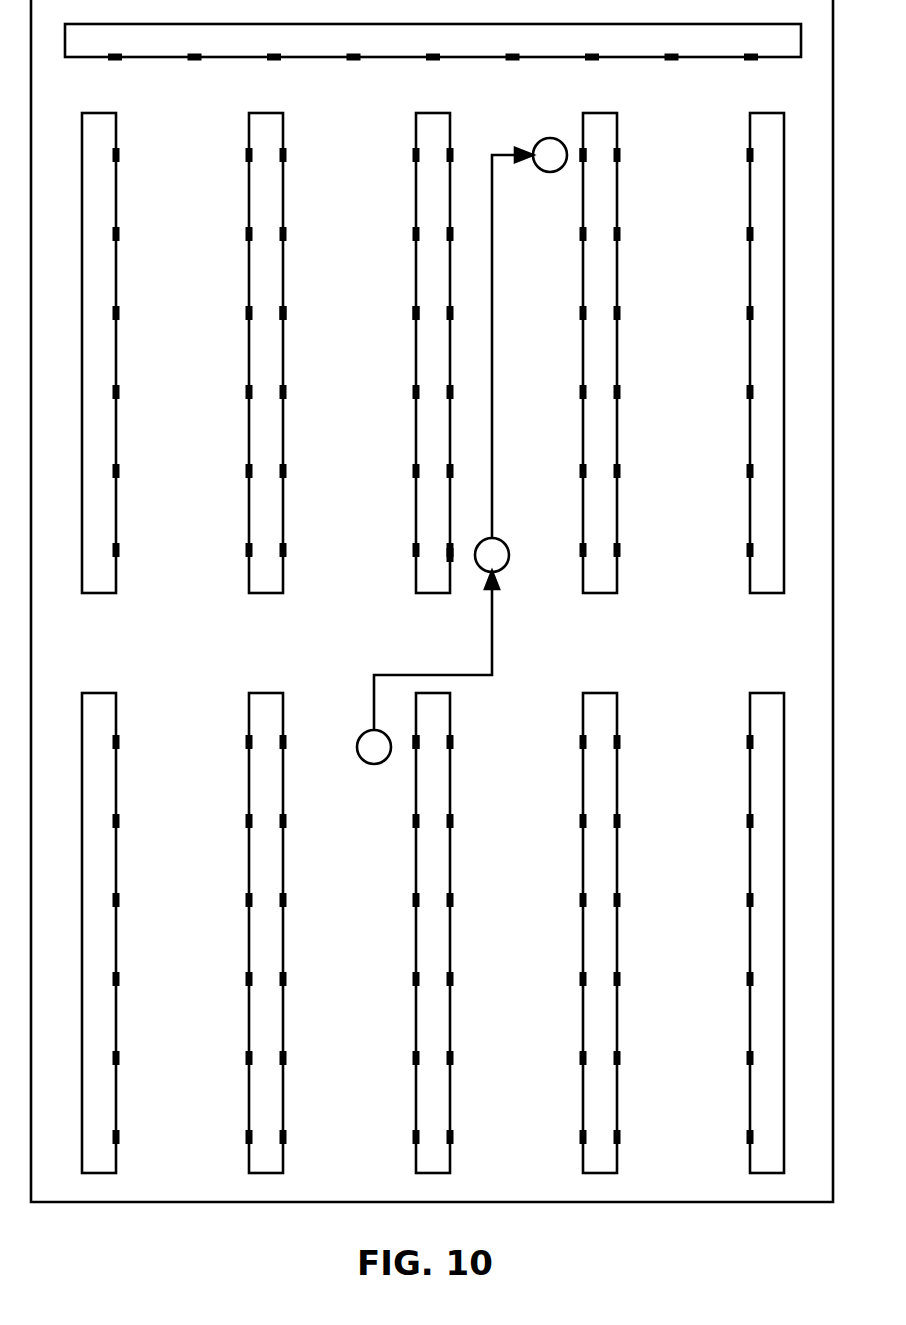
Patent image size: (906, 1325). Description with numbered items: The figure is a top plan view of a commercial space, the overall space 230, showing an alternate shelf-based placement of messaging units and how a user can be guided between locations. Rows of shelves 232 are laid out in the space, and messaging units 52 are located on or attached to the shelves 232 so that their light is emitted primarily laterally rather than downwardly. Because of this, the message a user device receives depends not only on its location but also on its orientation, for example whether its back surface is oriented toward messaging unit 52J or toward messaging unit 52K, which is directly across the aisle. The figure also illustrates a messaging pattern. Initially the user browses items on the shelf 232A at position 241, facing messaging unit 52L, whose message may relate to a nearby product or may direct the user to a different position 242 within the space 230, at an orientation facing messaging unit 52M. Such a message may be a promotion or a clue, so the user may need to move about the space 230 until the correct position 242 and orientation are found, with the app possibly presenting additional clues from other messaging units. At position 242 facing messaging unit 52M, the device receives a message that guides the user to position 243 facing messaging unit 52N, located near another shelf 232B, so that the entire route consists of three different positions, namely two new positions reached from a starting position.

The overall space 230 is at (201, 665).
The shelves 232 is at (243, 58).
The shelf 232A is at (420, 848).
The shelf 232B is at (450, 128).
The messaging units 52 is at (118, 550).
The messaging unit 52J is at (284, 313).
The messaging unit 52K is at (414, 313).
The messaging unit 52L is at (414, 742).
The messaging unit 52M is at (454, 556).
The messaging unit 52N is at (581, 157).
The position 241 is at (357, 747).
The position 242 is at (509, 553).
The position 243 is at (550, 138).